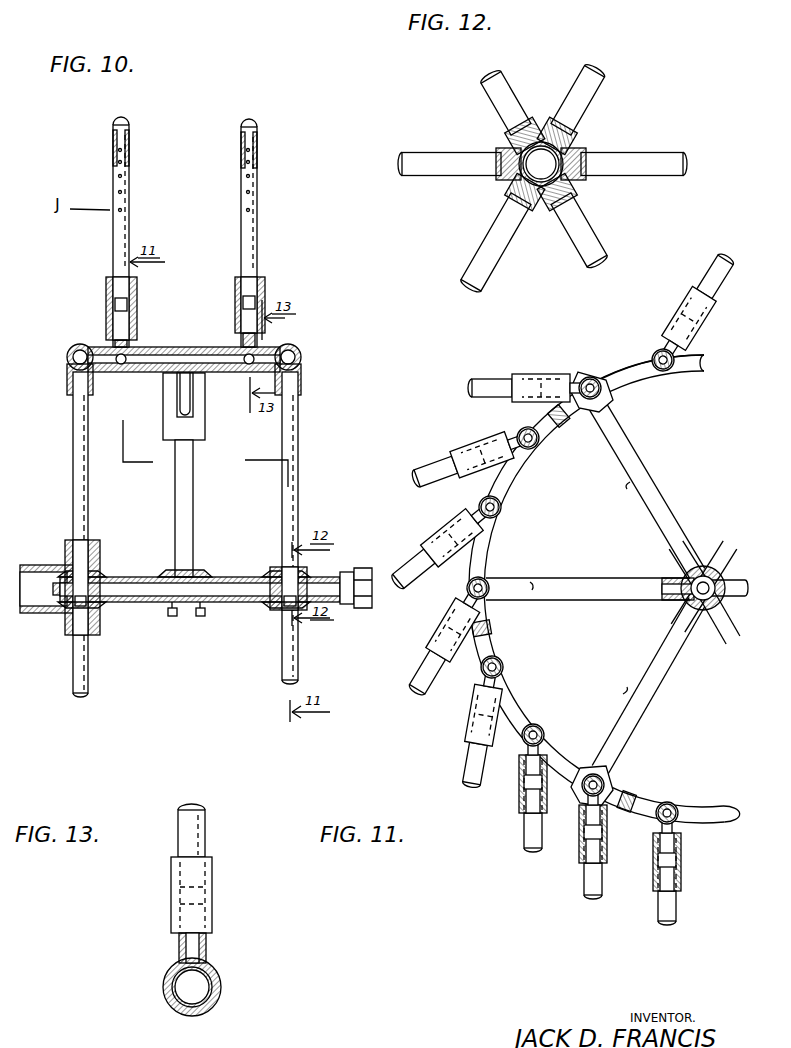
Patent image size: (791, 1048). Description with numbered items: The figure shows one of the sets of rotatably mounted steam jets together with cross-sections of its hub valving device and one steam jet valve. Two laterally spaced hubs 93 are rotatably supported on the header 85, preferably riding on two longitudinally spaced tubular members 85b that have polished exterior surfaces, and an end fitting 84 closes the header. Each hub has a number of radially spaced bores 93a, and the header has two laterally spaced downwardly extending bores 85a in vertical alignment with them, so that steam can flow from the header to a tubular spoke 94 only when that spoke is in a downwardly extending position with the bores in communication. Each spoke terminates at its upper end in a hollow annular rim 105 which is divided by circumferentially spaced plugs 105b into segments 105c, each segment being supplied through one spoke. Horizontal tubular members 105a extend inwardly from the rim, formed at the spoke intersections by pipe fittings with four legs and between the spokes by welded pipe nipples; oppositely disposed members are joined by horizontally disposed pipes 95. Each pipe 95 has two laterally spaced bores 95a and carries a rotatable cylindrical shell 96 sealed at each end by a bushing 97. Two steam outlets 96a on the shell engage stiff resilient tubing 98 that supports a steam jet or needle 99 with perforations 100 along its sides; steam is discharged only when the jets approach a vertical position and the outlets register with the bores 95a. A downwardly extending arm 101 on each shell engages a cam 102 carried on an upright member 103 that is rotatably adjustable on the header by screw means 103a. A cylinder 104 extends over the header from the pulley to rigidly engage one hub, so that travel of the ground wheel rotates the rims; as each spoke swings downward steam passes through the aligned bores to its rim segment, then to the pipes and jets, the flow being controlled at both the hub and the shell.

In FIG. 10, the pipe coupling nut 84 is at (356, 567).
In FIG. 10, the header 85 is at (45, 600).
In FIG. 12, the header 85 is at (523, 176).
In FIG. 11, the header 85 is at (724, 599).
In FIG. 10, the downwardly extending bores 85a is at (100, 616).
In FIG. 12, the downwardly extending bores 85a is at (572, 186).
In FIG. 11, the downwardly extending bores 85a is at (702, 615).
In FIG. 10, the tubular members 85b is at (106, 576).
In FIG. 12, the tubular members 85b is at (510, 153).
In FIG. 10, the hubs 93 is at (100, 558).
In FIG. 12, the hubs 93 is at (577, 141).
In FIG. 11, the hubs 93 is at (684, 577).
In FIG. 12, the radially spaced bores 93a is at (556, 136).
In FIG. 10, the tubular spoke 94 is at (73, 441).
In FIG. 12, the tubular spoke 94 is at (578, 92).
In FIG. 11, the tubular spoke 94 is at (641, 478).
In FIG. 10, the pipes 95 is at (222, 347).
In FIG. 13, the pipes 95 is at (222, 996).
In FIG. 10, the bores 95a is at (135, 348).
In FIG. 13, the bores 95a is at (167, 982).
In FIG. 10, the cylindrical shell 96 is at (121, 365).
In FIG. 13, the cylindrical shell 96 is at (220, 975).
In FIG. 10, the steam outlets 96a is at (258, 342).
In FIG. 11, the steam outlets 96a is at (575, 378).
In FIG. 13, the steam outlets 96a is at (206, 948).
In FIG. 10, the bushing 97 is at (72, 349).
In FIG. 10, the resilient tubing 98 is at (137, 292).
In FIG. 11, the resilient tubing 98 is at (546, 376).
In FIG. 13, the resilient tubing 98 is at (200, 880).
In FIG. 10, the steam jet 99 is at (130, 184).
In FIG. 11, the steam jet 99 is at (484, 390).
In FIG. 13, the steam jet 99 is at (205, 828).
In FIG. 10, the perforations 100 is at (130, 138).
In FIG. 10, the arm 101 is at (183, 395).
In FIG. 10, the cam 102 is at (163, 431).
In FIG. 10, the upright member 103 is at (193, 494).
In FIG. 10, the screw means 103a is at (200, 620).
In FIG. 10, the cylinder 104 is at (42, 566).
In FIG. 11, the hollow annular rim 105 is at (640, 362).
In FIG. 10, the tubular members 105a is at (301, 355).
In FIG. 11, the tubular members 105a is at (612, 394).
In FIG. 11, the plugs 105b is at (558, 424).
In FIG. 11, the segments 105c is at (508, 484).